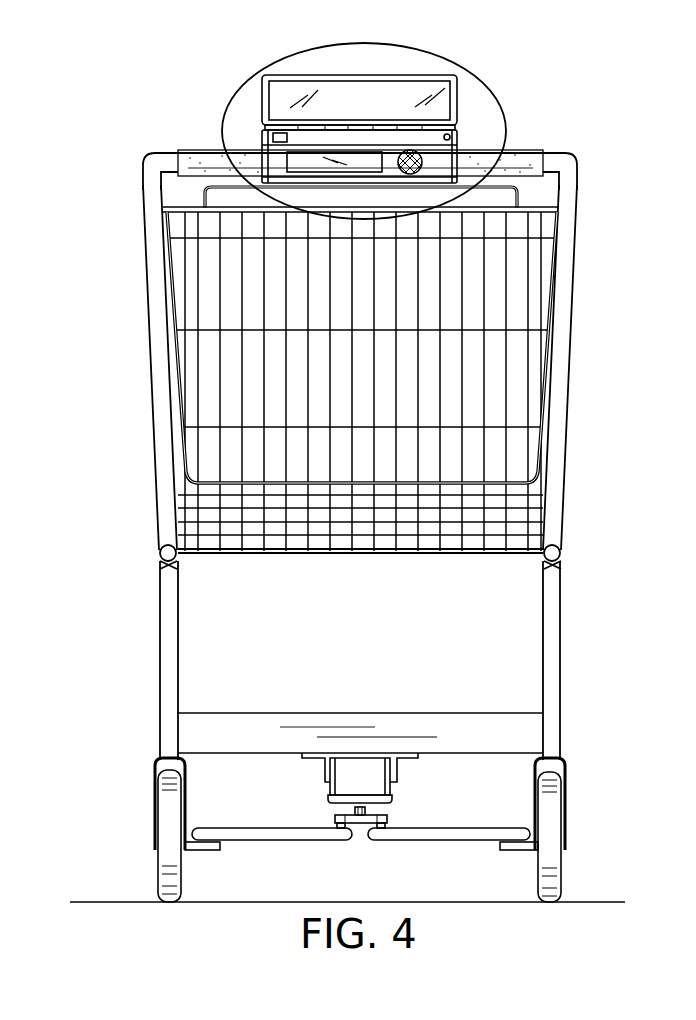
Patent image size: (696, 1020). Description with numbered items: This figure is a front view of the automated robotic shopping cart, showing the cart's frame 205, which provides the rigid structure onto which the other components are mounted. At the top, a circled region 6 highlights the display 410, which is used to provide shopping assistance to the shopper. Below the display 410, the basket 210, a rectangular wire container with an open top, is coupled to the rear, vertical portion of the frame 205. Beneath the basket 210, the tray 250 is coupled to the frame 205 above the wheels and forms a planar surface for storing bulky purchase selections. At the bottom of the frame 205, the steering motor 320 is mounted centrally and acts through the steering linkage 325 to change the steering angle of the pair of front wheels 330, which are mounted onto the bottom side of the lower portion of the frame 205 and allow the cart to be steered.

The display unit 6 is at (384, 131).
The display 410 is at (445, 102).
The basket 210 is at (525, 507).
The frame 205 is at (550, 608).
The tray 250 is at (498, 722).
The steering motor 320 is at (358, 768).
The steering linkage 325 is at (328, 833).
The pair of front wheels 330 is at (167, 877).